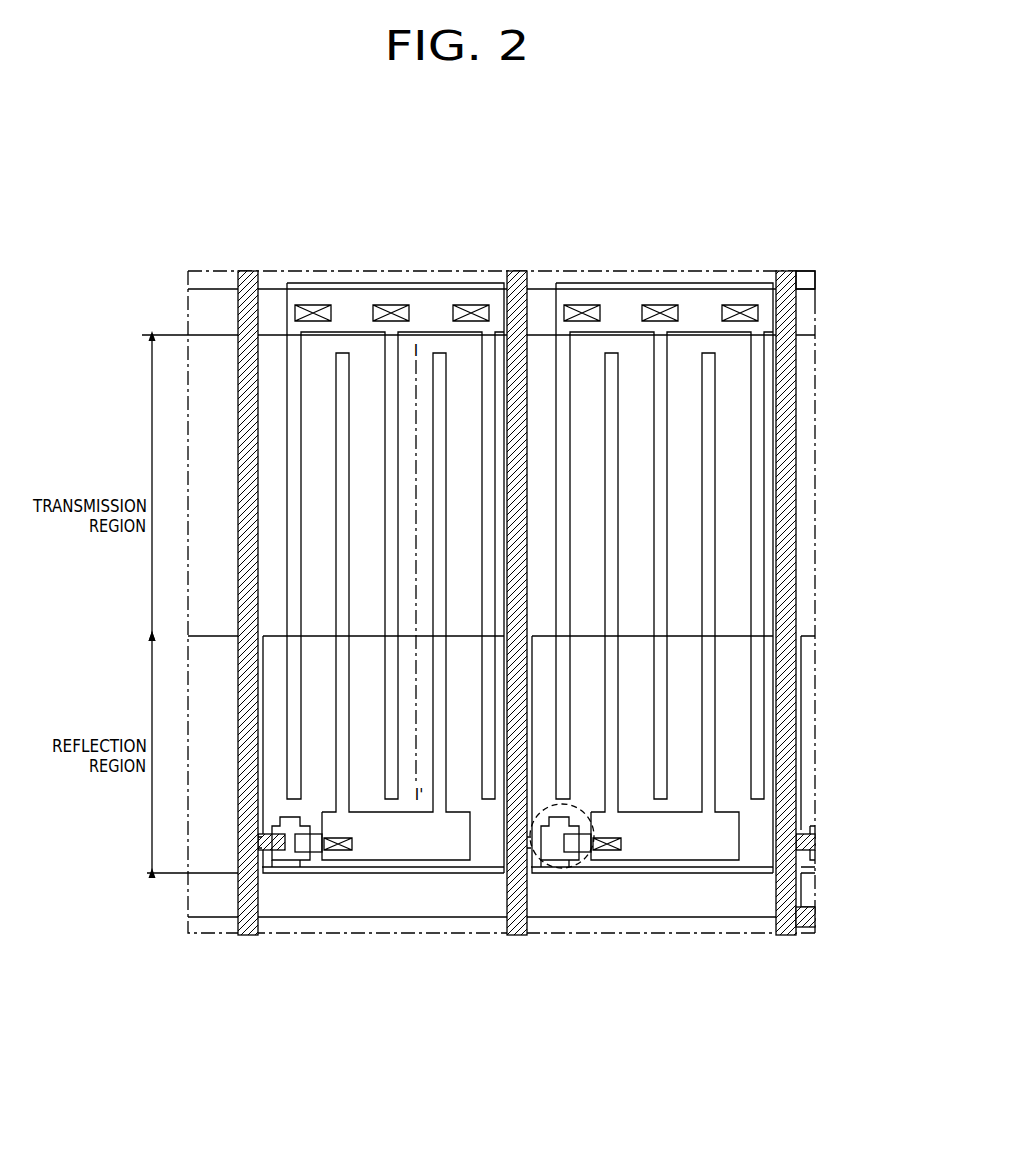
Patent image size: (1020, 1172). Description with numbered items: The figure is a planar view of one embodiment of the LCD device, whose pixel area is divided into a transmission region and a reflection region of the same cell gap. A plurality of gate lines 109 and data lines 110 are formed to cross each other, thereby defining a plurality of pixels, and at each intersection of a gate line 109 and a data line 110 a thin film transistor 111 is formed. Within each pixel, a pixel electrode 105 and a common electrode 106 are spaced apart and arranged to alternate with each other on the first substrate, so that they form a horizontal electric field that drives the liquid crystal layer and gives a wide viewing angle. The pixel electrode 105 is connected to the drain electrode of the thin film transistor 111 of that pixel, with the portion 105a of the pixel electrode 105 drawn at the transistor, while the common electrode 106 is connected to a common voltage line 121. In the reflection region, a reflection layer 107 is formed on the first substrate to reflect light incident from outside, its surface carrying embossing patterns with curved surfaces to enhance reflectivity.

The pixel electrode 105 is at (712, 722).
The drain contact portion of pixel electrode 105a is at (568, 847).
The common electrode 106 is at (762, 673).
The reflection layer 107 is at (763, 813).
The gate line 109 is at (807, 887).
The data line 110 is at (800, 915).
The thin film transistor 111 is at (585, 858).
The common voltage line 121 is at (803, 310).